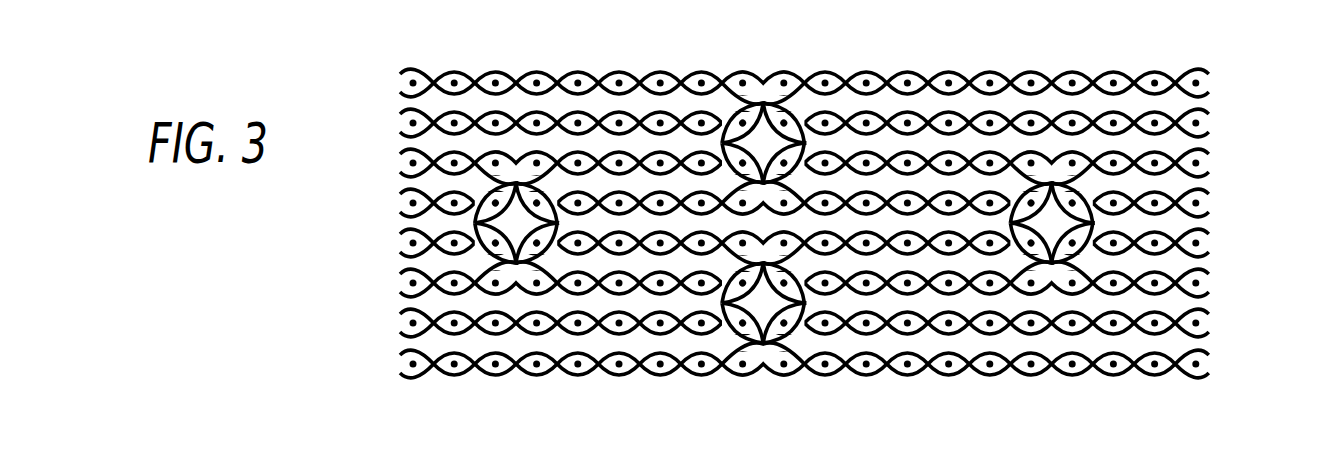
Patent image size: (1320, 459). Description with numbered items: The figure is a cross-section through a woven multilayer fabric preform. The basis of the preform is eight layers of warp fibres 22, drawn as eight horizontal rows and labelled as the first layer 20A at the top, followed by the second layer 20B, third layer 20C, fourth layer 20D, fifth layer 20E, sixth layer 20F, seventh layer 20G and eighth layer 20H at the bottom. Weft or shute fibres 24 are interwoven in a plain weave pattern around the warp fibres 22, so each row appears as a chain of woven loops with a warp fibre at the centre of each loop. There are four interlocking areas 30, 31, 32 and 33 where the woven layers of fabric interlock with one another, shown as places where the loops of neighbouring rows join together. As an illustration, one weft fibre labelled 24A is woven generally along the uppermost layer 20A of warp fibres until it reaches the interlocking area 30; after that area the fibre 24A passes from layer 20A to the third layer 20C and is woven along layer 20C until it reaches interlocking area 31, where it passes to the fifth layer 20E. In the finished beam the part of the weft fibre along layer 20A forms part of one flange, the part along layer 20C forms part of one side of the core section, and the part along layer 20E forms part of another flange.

The first layer of warp fibres 20A is at (771, 83).
The second layer of warp fibres 20B is at (771, 123).
The third layer of warp fibres 20C is at (771, 163).
The fourth layer of warp fibres 20D is at (771, 203).
The fifth layer of warp fibres 20E is at (771, 243).
The sixth layer of warp fibres 20F is at (771, 283).
The seventh layer of warp fibres 20G is at (771, 323).
The eighth layer of warp fibres 20H is at (771, 364).
The warp fibres 22 is at (1207, 138).
The weft fibres 24 is at (1065, 76).
The weft fibre 24A is at (410, 76).
The interlocking area 30 is at (730, 125).
The interlocking area 31 is at (1048, 230).
The interlocking area 32 is at (762, 298).
The interlocking area 33 is at (513, 222).